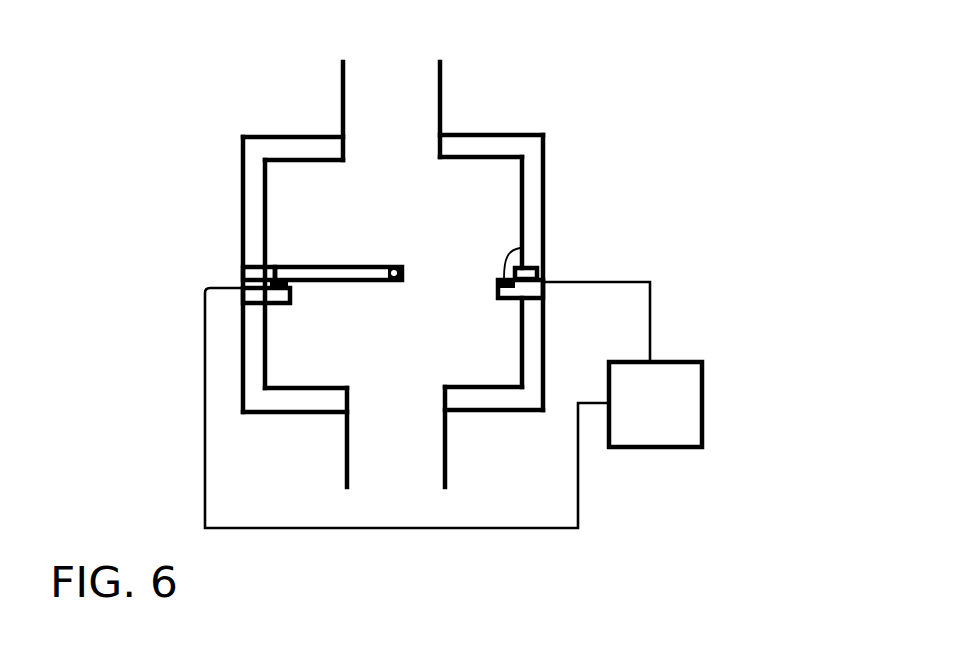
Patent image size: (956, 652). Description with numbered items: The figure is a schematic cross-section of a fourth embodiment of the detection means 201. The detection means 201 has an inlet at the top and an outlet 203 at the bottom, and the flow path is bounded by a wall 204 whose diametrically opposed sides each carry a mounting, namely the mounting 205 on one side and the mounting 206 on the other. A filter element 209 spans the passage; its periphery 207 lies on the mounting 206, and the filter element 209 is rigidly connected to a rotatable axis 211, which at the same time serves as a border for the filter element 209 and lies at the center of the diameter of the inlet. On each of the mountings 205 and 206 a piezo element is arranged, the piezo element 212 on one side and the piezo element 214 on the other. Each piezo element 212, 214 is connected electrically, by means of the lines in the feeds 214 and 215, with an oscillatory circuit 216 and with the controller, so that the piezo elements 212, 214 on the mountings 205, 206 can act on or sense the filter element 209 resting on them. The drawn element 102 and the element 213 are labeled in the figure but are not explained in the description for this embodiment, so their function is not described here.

The electrode assembly 201 is at (207, 84).
The chamber wall 102 is at (422, 90).
The lower chamber wall 203 is at (430, 448).
The housing 204 is at (532, 162).
The upper contact plate 205 is at (537, 273).
The contact block 206 is at (243, 280).
The electrode plate 207 is at (278, 278).
The arm 209 is at (347, 270).
The pivot 211 is at (395, 283).
The recess 212 is at (522, 245).
The insulator 213 is at (262, 272).
The lower contact plate 214 is at (545, 293).
The lower plate 215 is at (252, 310).
The power supply 216 is at (687, 405).